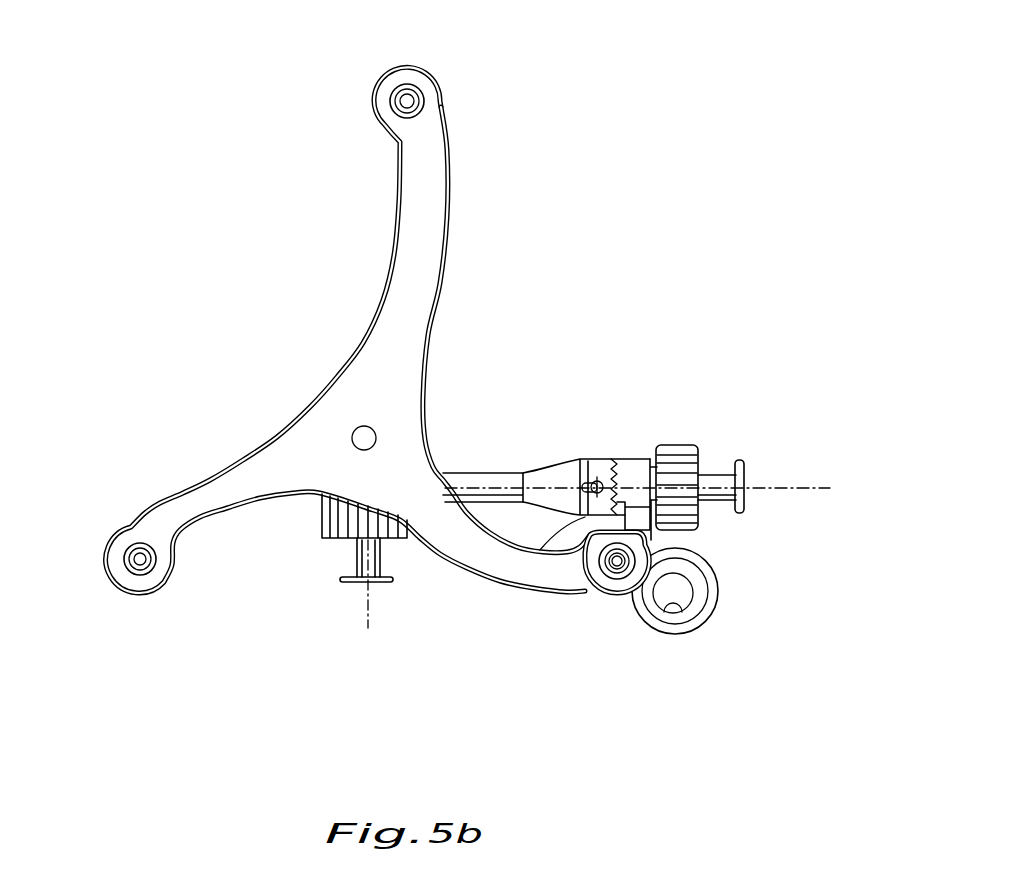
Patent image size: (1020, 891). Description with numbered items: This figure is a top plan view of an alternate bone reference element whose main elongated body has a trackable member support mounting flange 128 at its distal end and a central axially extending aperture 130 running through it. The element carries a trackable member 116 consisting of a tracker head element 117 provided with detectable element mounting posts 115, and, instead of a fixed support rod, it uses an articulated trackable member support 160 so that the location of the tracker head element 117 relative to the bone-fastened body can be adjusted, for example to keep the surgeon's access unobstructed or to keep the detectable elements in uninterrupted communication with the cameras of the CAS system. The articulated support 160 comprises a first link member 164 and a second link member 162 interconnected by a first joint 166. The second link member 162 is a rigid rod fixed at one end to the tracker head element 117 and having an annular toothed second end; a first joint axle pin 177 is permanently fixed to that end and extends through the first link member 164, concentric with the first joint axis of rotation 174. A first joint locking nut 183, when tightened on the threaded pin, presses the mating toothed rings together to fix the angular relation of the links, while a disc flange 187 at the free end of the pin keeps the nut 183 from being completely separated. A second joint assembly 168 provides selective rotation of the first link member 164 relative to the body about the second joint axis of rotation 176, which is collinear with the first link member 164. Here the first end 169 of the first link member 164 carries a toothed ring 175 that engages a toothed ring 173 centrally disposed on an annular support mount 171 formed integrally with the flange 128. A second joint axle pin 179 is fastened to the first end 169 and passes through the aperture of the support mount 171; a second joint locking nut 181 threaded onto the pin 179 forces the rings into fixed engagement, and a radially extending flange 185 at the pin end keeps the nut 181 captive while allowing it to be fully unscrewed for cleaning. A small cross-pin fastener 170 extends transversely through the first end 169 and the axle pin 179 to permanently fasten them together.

The detectable element mounting posts 115 is at (410, 100).
The trackable member 116 is at (445, 346).
The tracker head element 117 is at (410, 325).
The trackable member support mounting flange 128 is at (712, 598).
The central axially extending aperture 130 is at (667, 603).
The articulated trackable member support 160 is at (659, 412).
The second link member 162 is at (362, 428).
The first link member 164 is at (467, 472).
The first joint 166 is at (302, 516).
The second joint assembly 168 is at (716, 414).
The first end 169 is at (588, 463).
The cross-pin fastener 170 is at (585, 517).
The annular support mount 171 is at (640, 467).
The toothed ring 173 is at (614, 456).
The first joint axis of rotation 174 is at (368, 628).
The toothed ring 175 is at (603, 500).
The second joint axis of rotation 176 is at (800, 488).
The first joint axle pin 177 is at (378, 560).
The second joint axle pin 179 is at (715, 498).
The second joint locking nut 181 is at (688, 465).
The first joint locking nut 183 is at (343, 586).
The radially extending flange 185 is at (745, 473).
The disc flange 187 is at (348, 583).